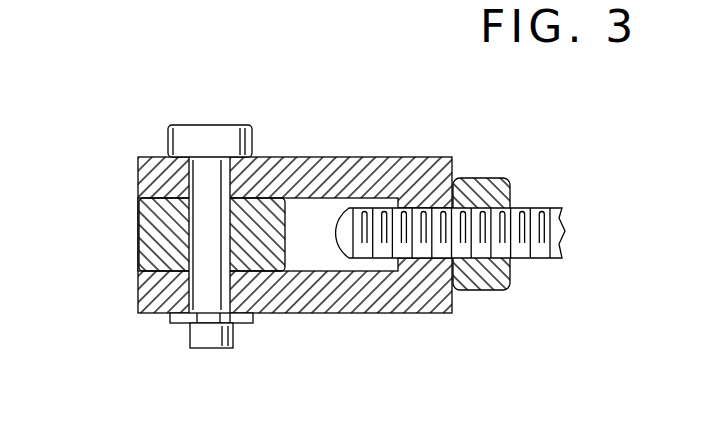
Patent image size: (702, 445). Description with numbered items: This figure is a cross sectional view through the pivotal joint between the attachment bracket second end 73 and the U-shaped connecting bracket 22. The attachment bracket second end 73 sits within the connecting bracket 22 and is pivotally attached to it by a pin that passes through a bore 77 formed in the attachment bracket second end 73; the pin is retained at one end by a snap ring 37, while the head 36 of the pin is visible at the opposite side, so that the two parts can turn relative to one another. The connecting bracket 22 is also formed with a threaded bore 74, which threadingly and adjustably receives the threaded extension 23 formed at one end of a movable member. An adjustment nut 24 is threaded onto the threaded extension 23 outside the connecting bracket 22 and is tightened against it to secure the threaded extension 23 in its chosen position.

The connecting bracket 22 is at (364, 313).
The threaded extension 23 is at (540, 208).
The adjustment nut 24 is at (480, 178).
The bolt 36 is at (212, 126).
The snap ring 37 is at (254, 320).
The attachment bracket second end 73 is at (138, 241).
The threaded bore 74 is at (425, 206).
The bore 77 is at (200, 291).